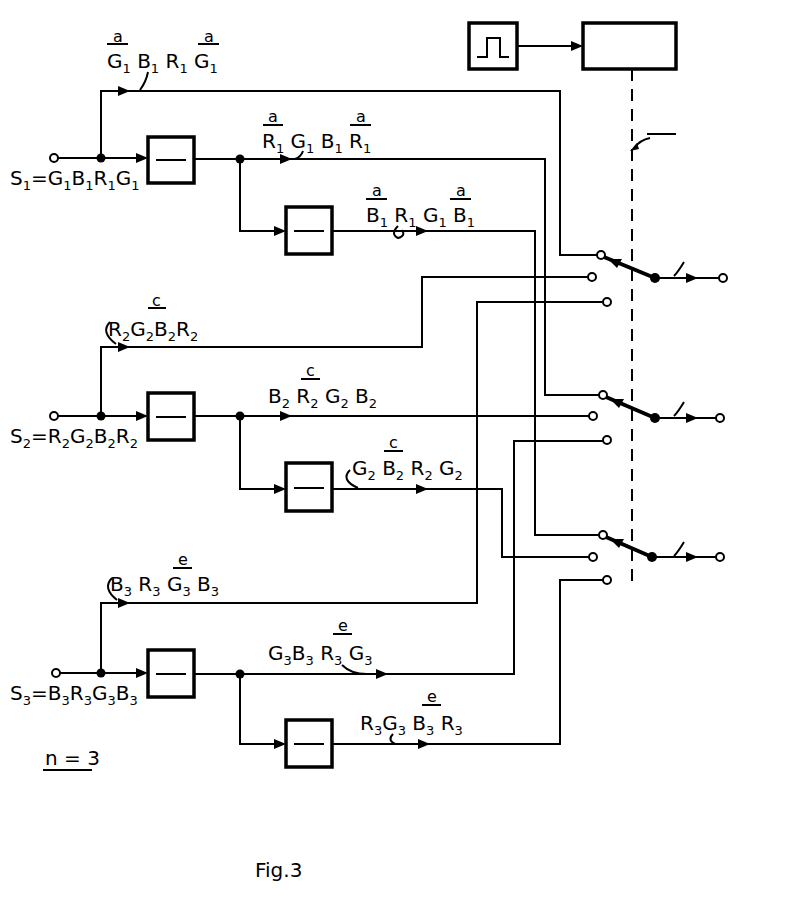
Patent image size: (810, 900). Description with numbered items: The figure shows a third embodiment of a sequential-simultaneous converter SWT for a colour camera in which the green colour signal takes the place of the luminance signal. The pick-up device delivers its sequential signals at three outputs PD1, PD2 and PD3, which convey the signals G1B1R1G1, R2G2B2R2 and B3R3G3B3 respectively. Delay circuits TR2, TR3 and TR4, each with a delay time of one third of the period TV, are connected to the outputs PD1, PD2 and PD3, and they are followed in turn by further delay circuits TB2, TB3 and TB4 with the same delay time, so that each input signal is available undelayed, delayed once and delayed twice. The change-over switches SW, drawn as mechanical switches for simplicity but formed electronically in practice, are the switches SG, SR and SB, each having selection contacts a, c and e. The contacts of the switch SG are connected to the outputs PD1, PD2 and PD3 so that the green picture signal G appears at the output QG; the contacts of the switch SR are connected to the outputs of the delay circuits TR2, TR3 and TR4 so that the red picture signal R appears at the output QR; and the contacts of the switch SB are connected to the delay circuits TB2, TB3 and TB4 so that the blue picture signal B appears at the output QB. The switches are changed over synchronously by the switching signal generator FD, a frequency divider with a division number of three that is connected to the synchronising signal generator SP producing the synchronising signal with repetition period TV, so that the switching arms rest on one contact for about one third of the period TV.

The synchronising signal generator SP is at (465, 41).
The repetition period of the synchronising signal TV is at (573, 42).
The switching signal generator FD is at (676, 50).
The output of the pick-up device PD1 is at (61, 152).
The output of the pick-up device PD2 is at (58, 408).
The output of the pick-up device PD3 is at (54, 669).
The delay circuit TR2 is at (183, 183).
The delay circuit TB2 is at (335, 252).
The delay circuit TR3 is at (196, 436).
The delay circuit TB3 is at (333, 508).
The delay circuit TR4 is at (196, 697).
The delay circuit TB4 is at (333, 765).
The change-over switch SG is at (650, 286).
The change-over switch SR is at (650, 420).
The change-over switch SB is at (650, 560).
The output QG is at (721, 284).
The output QR is at (719, 424).
The output QB is at (719, 563).
The change-over switches SW is at (638, 632).
The sequential-simultaneous converter SWT is at (631, 790).